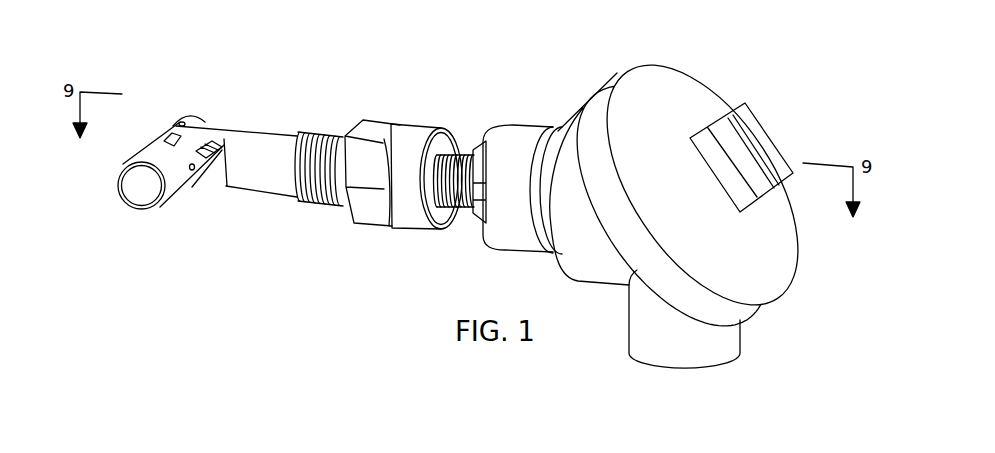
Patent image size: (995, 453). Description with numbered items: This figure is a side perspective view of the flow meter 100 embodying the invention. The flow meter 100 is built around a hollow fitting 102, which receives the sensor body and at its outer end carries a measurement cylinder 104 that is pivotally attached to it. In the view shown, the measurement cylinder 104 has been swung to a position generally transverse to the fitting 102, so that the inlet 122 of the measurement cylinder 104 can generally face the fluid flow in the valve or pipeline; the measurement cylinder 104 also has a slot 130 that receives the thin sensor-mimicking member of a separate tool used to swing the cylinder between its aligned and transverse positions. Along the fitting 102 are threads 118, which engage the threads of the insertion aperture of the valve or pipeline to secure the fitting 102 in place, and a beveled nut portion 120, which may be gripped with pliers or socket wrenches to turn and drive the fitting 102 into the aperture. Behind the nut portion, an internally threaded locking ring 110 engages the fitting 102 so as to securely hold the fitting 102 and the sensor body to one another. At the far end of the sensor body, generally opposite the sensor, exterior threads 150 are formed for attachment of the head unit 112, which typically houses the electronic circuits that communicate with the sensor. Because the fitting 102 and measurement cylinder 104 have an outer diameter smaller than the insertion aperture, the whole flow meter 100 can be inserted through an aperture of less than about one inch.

The flow meter 100 is at (277, 300).
The fitting 102 is at (250, 132).
The measurement cylinder 104 is at (157, 153).
The locking ring 110 is at (410, 218).
The head unit 112 is at (600, 97).
The threads 118 is at (330, 137).
The beveled nut portion 120 is at (382, 127).
The inlet 122 is at (138, 198).
The slot 130 is at (207, 152).
The exterior threads 150 is at (465, 153).